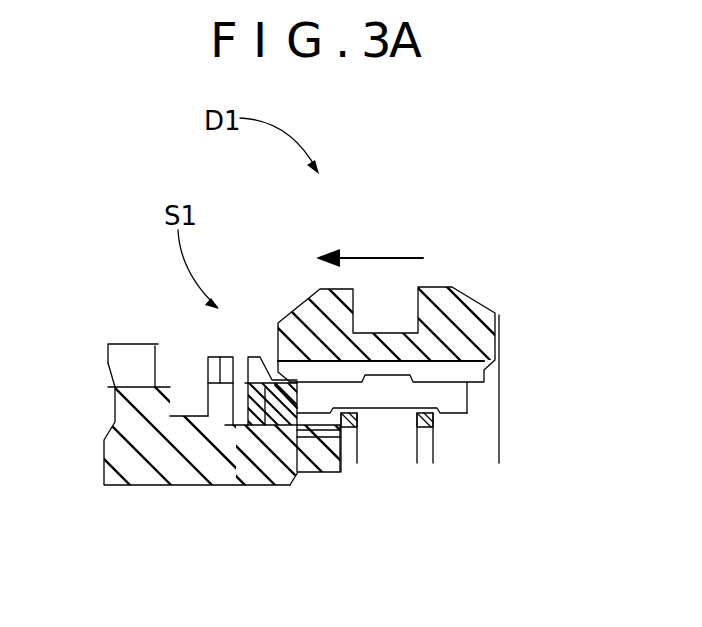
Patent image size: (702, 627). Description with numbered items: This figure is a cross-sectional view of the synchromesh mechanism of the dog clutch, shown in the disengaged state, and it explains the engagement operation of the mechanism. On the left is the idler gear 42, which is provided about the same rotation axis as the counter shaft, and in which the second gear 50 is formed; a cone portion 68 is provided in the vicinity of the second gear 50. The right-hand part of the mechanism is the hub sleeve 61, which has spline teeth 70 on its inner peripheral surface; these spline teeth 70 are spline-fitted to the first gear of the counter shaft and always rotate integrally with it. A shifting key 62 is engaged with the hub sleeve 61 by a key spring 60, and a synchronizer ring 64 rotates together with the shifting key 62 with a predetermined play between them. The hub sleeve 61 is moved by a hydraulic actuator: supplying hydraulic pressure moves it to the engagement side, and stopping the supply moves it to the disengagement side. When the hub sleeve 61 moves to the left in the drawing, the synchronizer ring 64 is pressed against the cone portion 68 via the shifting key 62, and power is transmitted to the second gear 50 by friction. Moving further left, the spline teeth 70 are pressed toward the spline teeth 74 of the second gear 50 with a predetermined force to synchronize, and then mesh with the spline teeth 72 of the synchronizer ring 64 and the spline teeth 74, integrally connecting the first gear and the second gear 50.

The idler gear 42 is at (143, 463).
The second gear 50 is at (209, 397).
The key spring 60 is at (433, 417).
The hub sleeve 61 is at (472, 300).
The shifting key 62 is at (387, 393).
The synchronizer ring 64 is at (270, 440).
The cone portion 68 is at (318, 458).
The spline teeth 70 is at (467, 410).
The spline teeth 72 is at (259, 357).
The spline teeth 74 is at (212, 357).